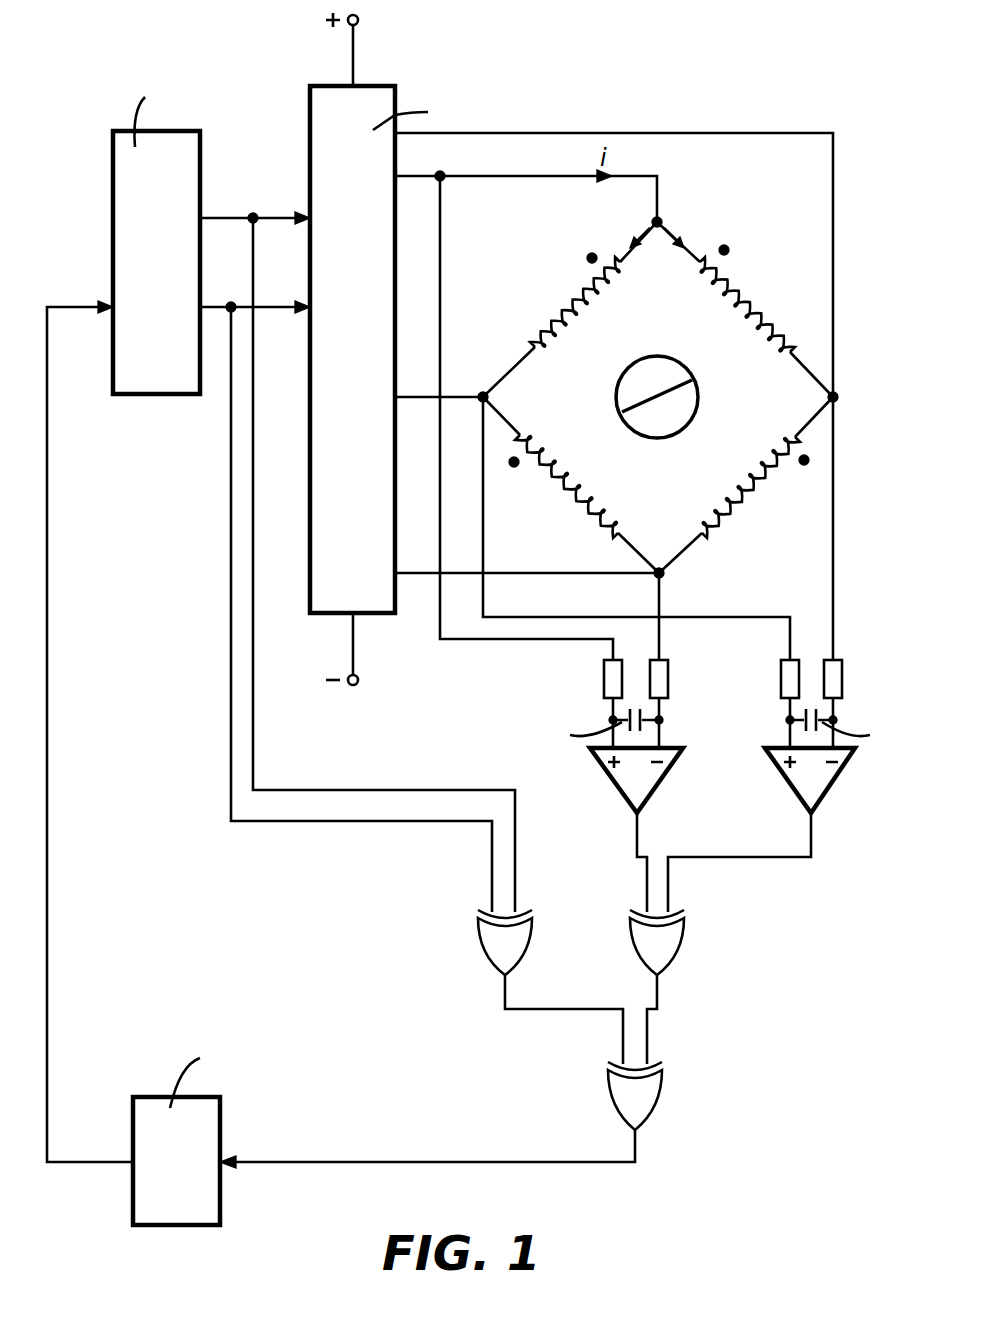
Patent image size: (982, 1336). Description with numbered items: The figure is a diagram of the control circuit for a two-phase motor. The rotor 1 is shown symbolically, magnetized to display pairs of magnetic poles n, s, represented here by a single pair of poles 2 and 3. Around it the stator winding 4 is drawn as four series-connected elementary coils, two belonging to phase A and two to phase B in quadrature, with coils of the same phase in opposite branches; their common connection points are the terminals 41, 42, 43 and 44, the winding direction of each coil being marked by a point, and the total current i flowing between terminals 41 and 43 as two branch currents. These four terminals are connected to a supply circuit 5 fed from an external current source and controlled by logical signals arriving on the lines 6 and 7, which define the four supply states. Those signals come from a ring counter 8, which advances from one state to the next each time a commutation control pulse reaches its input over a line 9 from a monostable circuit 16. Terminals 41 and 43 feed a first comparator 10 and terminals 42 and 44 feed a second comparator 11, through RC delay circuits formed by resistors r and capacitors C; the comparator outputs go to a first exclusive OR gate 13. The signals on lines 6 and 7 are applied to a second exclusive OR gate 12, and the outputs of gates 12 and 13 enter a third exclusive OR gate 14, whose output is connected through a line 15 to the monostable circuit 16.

The rotor 1 is at (699, 400).
The pole 2 is at (627, 388).
The pole 3 is at (652, 428).
The winding 4 is at (562, 282).
The supply circuit 5 is at (363, 368).
The line 6 is at (272, 216).
The line 7 is at (268, 312).
The ring counter 8 is at (168, 275).
The line 9 is at (70, 305).
The first comparator 10 is at (628, 785).
The second comparator 11 is at (820, 785).
The second exclusive logical OR gate 12 is at (492, 948).
The first exclusive logical OR gate 13 is at (668, 941).
The third exclusive logical OR gate 14 is at (648, 1097).
The line 15 is at (318, 1160).
The monostable circuit 16 is at (190, 1177).
The common connection point 41 is at (655, 245).
The common connection point 42 is at (503, 402).
The common connection point 43 is at (657, 554).
The common connection point 44 is at (812, 402).